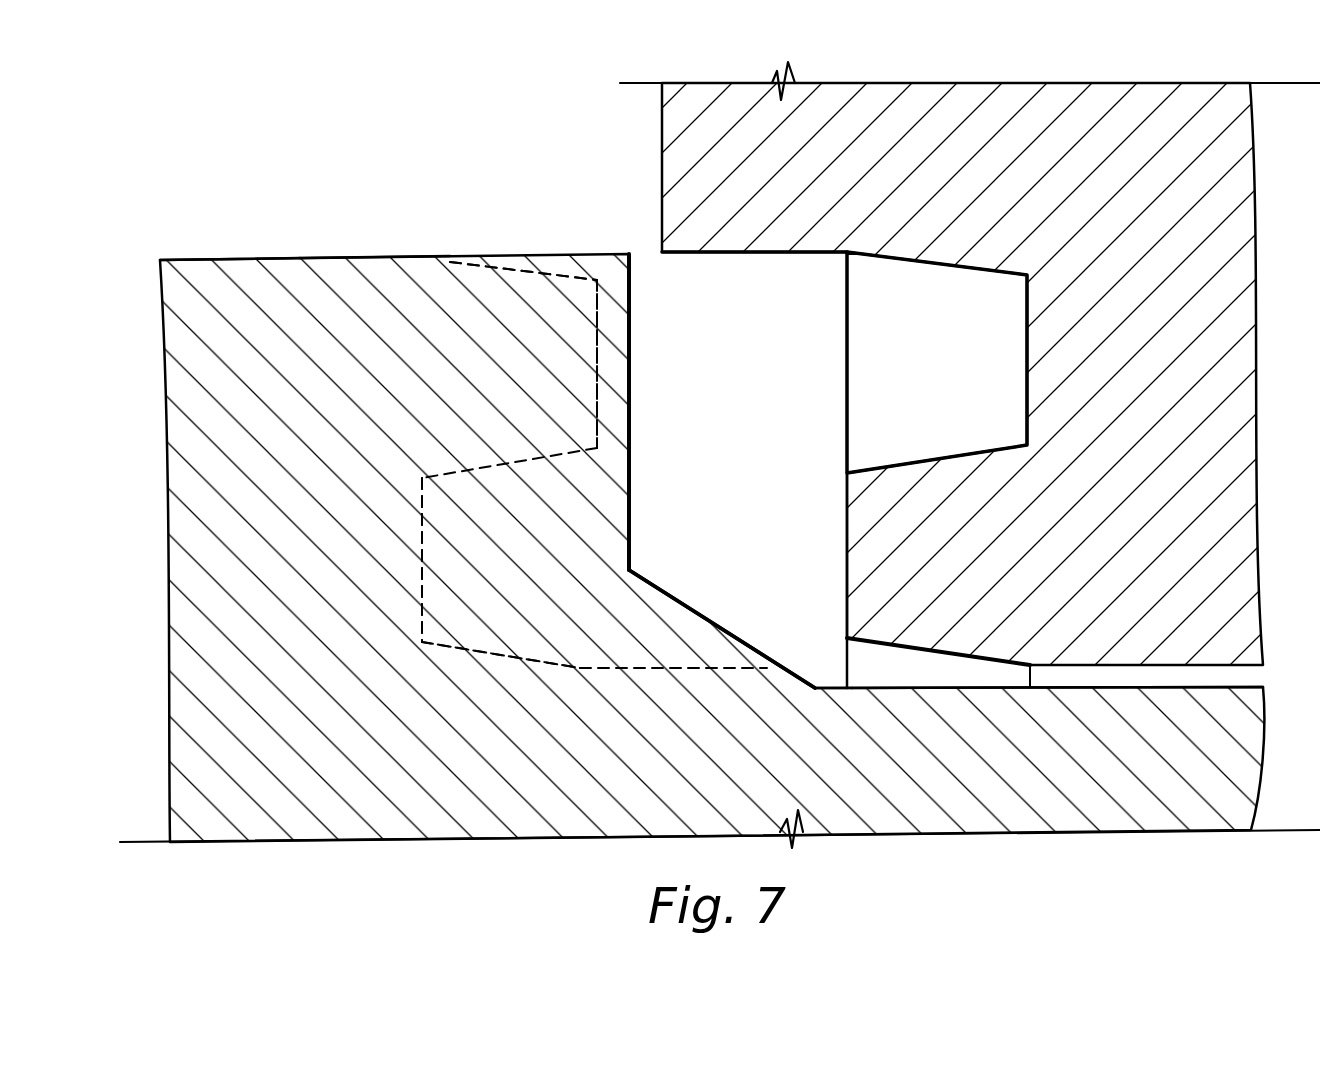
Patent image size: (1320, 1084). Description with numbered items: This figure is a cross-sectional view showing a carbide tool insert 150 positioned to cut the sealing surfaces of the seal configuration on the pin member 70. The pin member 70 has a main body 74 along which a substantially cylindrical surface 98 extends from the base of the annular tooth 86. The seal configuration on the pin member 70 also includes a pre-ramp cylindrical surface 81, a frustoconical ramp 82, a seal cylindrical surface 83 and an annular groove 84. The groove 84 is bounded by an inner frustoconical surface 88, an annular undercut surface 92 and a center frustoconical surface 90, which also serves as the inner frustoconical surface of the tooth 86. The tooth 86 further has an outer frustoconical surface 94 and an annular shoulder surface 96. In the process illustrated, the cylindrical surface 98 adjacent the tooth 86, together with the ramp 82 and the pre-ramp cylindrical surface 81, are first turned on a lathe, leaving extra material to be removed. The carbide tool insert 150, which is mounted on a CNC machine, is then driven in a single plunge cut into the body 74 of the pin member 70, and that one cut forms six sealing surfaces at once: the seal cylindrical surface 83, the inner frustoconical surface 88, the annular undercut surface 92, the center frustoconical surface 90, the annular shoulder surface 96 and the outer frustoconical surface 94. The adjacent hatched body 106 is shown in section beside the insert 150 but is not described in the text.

The pin member 70 is at (381, 800).
The main body 74 is at (232, 276).
The cylindrical surface 98 is at (359, 258).
The outer frustoconical surface 94 is at (511, 270).
The annular shoulder surface 96 is at (598, 348).
The annular tooth 86 is at (489, 370).
The center frustoconical surface 90 is at (468, 470).
The annular undercut surface 92 is at (425, 562).
The annular groove 84 is at (531, 570).
The inner frustoconical surface 88 is at (470, 652).
The seal cylindrical surface 83 is at (737, 668).
The frustoconical ramp 82 is at (797, 682).
The pre-ramp cylindrical surface 81 is at (1000, 687).
The second die body 106 is at (970, 568).
The carbide tool insert 150 is at (870, 361).